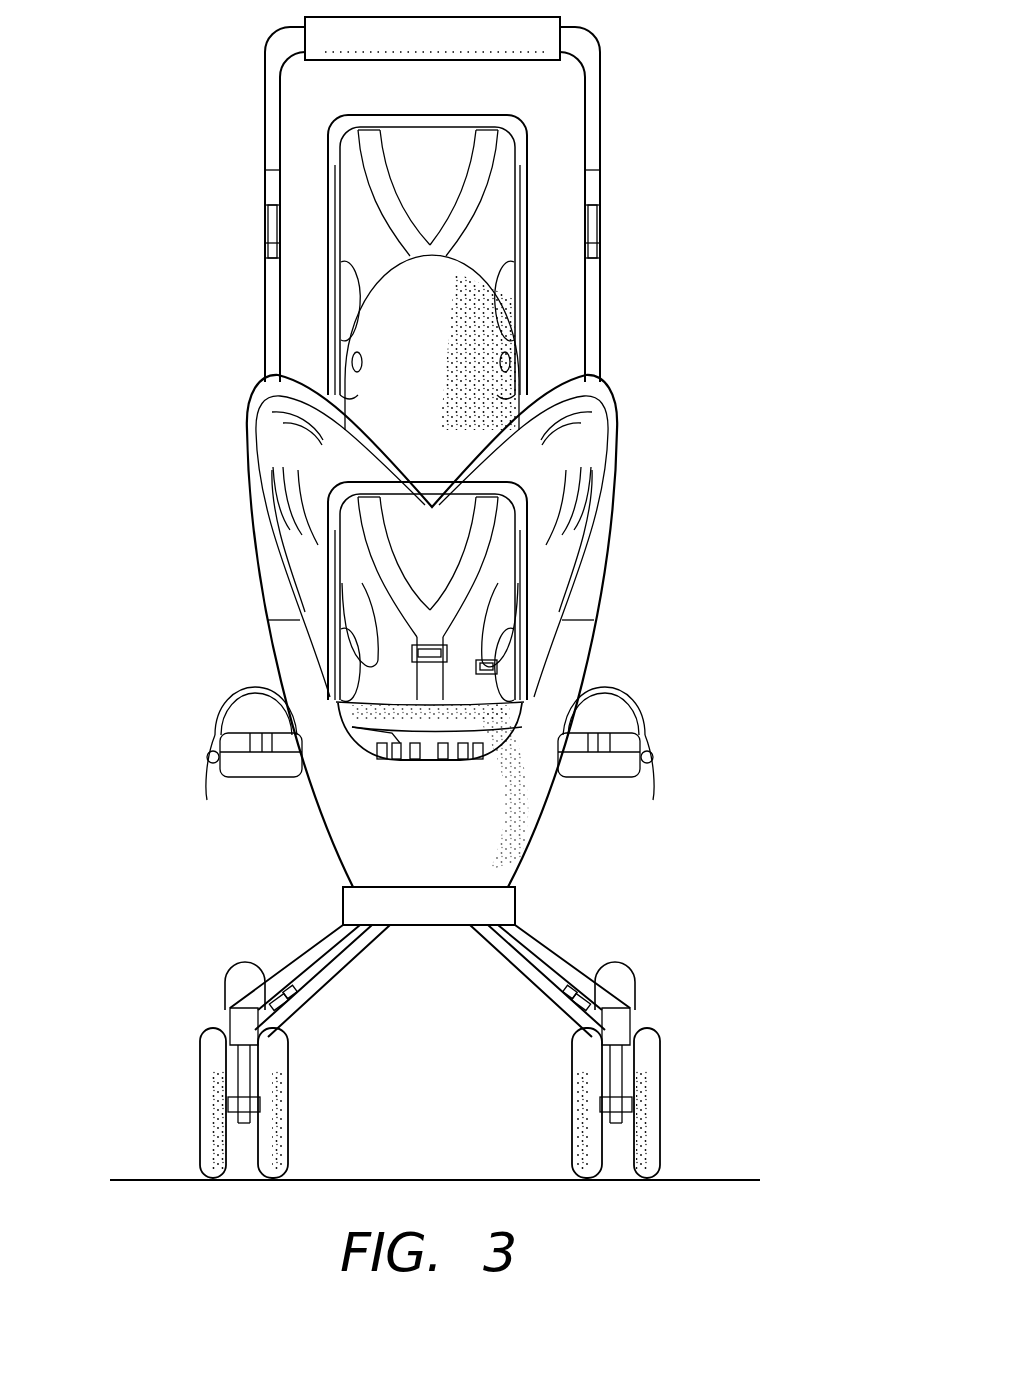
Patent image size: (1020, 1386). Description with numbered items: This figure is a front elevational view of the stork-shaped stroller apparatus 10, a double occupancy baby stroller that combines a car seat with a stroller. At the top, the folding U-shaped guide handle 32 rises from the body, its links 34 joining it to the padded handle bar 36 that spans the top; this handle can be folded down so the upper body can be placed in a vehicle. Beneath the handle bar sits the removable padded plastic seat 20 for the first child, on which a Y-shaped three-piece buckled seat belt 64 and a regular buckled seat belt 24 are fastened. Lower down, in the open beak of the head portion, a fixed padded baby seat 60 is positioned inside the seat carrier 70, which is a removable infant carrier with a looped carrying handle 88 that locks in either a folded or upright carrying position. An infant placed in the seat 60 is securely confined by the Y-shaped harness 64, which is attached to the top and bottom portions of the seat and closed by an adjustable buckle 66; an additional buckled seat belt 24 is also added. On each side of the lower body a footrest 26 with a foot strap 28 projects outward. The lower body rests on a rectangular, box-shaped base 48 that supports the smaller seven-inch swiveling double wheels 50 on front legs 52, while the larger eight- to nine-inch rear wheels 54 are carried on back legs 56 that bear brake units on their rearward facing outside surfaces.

The stork-shaped stroller apparatus 10 is at (660, 316).
The removable padded plastic seat 20 is at (552, 152).
The buckled seat belt 24 is at (530, 617).
The footrest 26 is at (575, 780).
The foot strap 28 is at (613, 687).
The folding U-shaped guide handle 32 is at (265, 146).
The links 34 is at (263, 224).
The padded handle bar 36 is at (470, 60).
The base 48 is at (443, 908).
The swiveling double wheels 50 is at (212, 1065).
The front legs 52 is at (315, 948).
The rear wheels 54 is at (235, 970).
The back legs 56 is at (505, 970).
The fixed padded baby seat 60 is at (357, 538).
The Y-shaped harness 64 is at (485, 145).
The adjustable buckle 66 is at (360, 640).
The seat carrier 70 is at (538, 520).
The looped carrying handle 88 is at (335, 466).